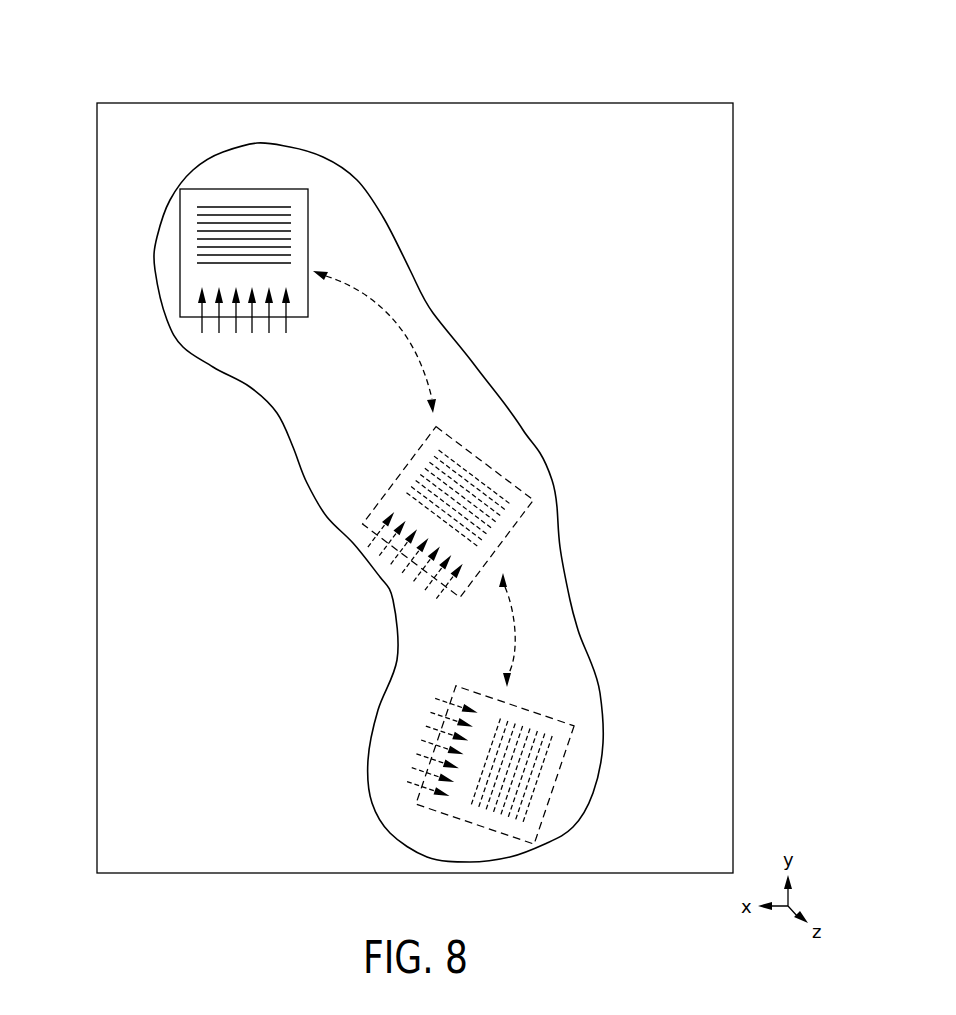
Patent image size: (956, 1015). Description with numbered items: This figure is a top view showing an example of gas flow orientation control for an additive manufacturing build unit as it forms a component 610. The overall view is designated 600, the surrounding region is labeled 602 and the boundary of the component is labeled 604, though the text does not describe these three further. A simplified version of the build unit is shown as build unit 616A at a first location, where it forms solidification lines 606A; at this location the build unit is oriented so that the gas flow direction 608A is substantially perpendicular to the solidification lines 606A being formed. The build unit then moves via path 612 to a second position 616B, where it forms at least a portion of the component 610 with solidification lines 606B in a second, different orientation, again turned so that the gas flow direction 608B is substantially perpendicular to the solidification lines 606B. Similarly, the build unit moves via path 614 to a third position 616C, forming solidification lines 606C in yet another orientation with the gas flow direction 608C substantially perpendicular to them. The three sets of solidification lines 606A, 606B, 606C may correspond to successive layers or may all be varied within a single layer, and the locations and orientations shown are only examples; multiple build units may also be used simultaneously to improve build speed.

The display system 600 is at (118, 92).
The display surface 602 is at (596, 258).
The display region outline 604 is at (560, 500).
The solidification lines 606A is at (253, 205).
The solidification lines 606B is at (447, 448).
The solidification lines 606C is at (528, 768).
The gas flow direction 608A is at (200, 328).
The gas flow direction 608B is at (368, 549).
The gas flow direction 608C is at (403, 783).
The component 610 is at (527, 460).
The path 612 is at (412, 327).
The path 614 is at (537, 630).
The build unit 616A is at (180, 255).
The build unit position 616B is at (373, 500).
The build unit position 616C is at (548, 805).